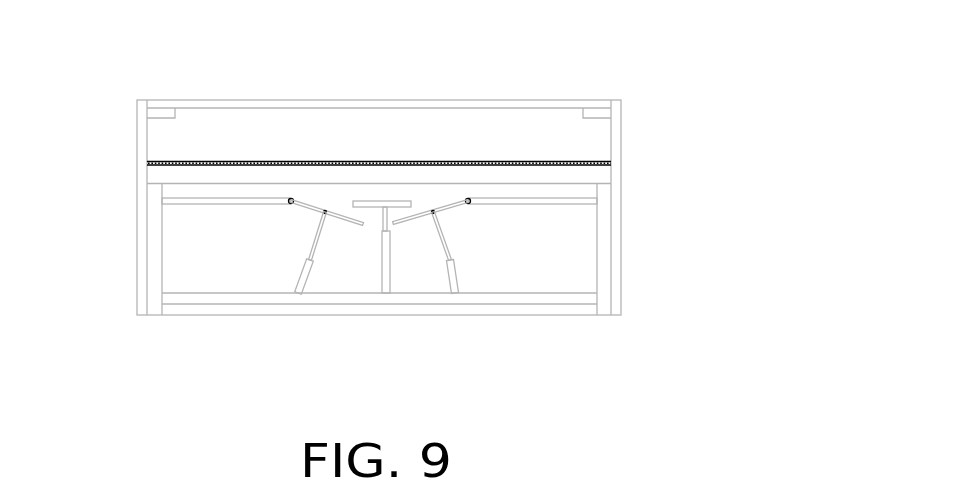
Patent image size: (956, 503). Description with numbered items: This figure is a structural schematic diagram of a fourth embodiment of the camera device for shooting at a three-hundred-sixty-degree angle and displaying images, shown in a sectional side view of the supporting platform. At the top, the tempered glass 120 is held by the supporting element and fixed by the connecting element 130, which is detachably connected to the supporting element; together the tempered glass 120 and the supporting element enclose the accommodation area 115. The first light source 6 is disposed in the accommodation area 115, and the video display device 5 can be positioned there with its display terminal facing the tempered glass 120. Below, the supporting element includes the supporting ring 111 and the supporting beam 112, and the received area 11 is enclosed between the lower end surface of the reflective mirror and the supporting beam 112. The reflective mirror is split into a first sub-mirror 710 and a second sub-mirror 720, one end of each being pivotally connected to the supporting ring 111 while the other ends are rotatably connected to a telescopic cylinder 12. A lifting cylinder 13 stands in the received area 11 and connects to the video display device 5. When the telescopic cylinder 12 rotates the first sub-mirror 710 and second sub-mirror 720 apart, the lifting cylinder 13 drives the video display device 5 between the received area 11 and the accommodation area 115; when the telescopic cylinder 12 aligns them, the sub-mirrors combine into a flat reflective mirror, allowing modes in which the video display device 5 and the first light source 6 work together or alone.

The video display device 5 is at (376, 201).
The first light source 6 is at (212, 160).
The received area 11 is at (221, 252).
The telescopic cylinder 12 is at (455, 270).
The lifting cylinder 13 is at (383, 280).
The supporting ring 111 is at (597, 242).
The supporting beam 112 is at (560, 293).
The accommodation area 115 is at (272, 131).
The tempered glass 120 is at (493, 107).
The connecting element 130 is at (615, 143).
The first sub-mirror 710 is at (310, 208).
The second sub-mirror 720 is at (410, 212).